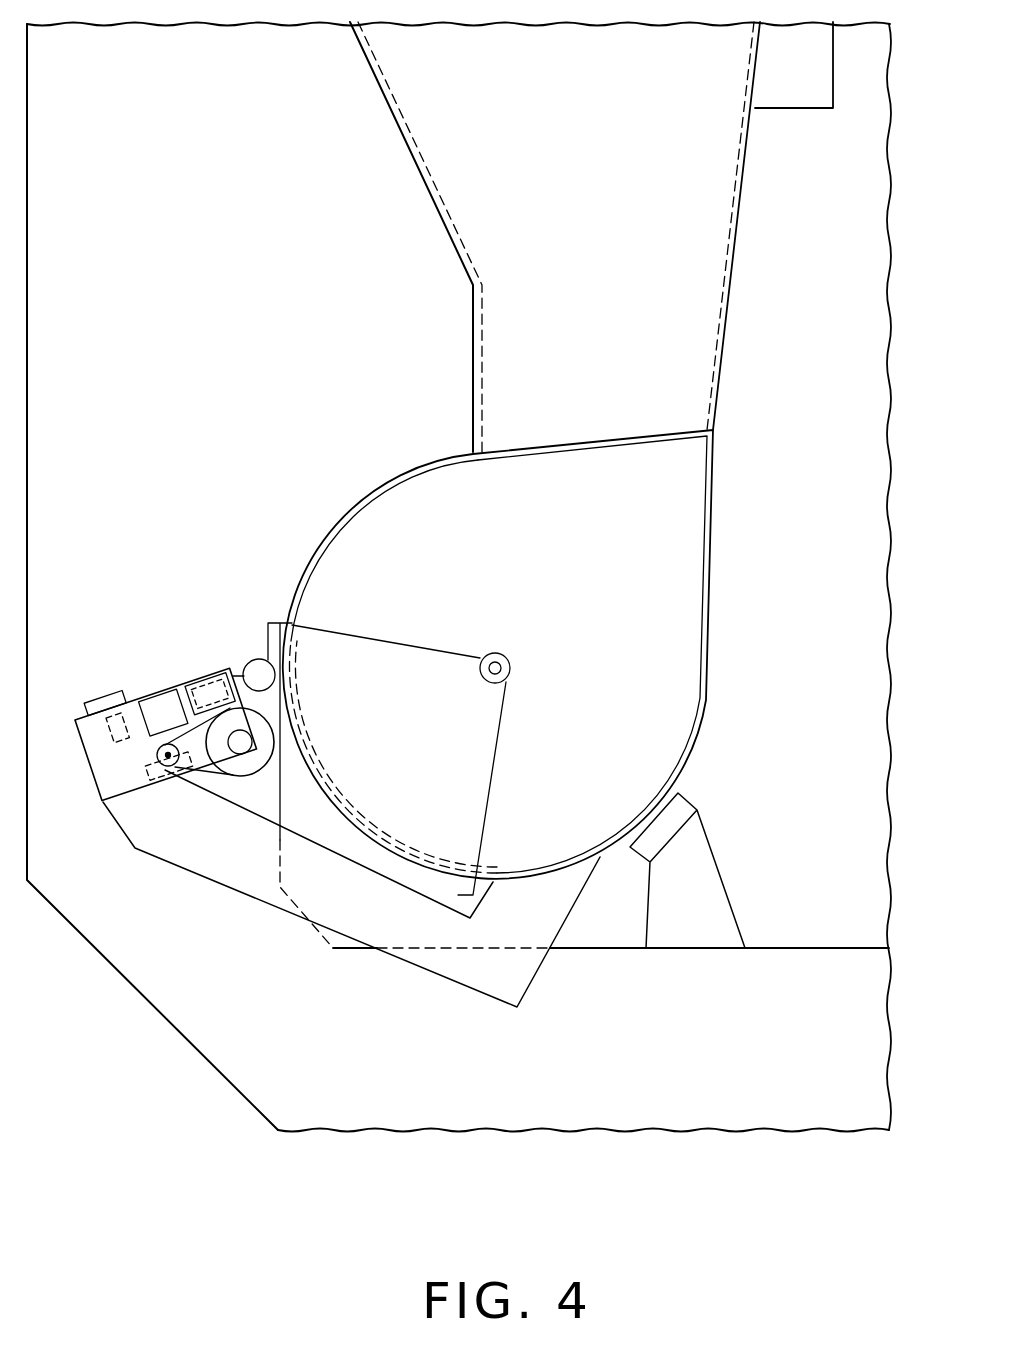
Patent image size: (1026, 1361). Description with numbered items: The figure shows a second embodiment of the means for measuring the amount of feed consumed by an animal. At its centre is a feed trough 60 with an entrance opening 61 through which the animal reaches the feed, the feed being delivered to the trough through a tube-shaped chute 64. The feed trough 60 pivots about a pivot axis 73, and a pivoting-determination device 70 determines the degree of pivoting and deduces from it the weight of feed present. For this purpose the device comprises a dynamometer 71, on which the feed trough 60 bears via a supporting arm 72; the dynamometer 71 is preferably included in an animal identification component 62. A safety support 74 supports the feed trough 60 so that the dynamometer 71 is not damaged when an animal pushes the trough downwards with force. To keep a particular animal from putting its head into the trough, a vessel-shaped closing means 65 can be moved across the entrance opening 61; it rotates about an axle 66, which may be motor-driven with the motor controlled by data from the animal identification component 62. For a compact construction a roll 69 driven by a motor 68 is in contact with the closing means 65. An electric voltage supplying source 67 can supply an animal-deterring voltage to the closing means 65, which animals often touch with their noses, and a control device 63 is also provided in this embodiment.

The feed trough 60 is at (692, 749).
The entrance opening 61 is at (370, 497).
The animal identification component 62 is at (125, 750).
The control device 63 is at (812, 73).
The tube-shaped chute 64 is at (732, 303).
The closing means 65 is at (308, 638).
The axle 66 is at (500, 668).
The electric voltage supplying source 67 is at (213, 688).
The motor 68 is at (168, 768).
The roll 69 is at (248, 780).
The pivoting-determination device 70 is at (157, 705).
The dynamometer 71 is at (135, 780).
The supporting arm 72 is at (370, 905).
The pivot axis 73 is at (250, 660).
The safety support 74 is at (708, 910).